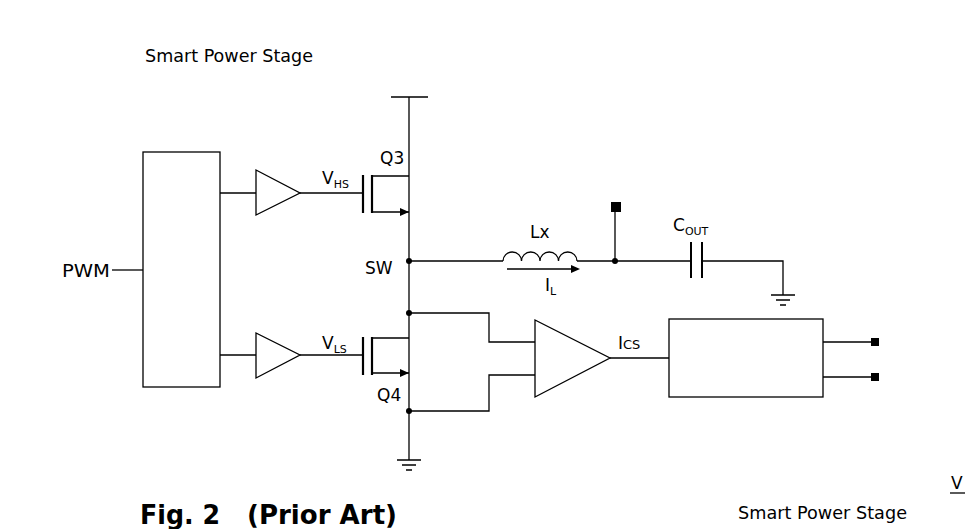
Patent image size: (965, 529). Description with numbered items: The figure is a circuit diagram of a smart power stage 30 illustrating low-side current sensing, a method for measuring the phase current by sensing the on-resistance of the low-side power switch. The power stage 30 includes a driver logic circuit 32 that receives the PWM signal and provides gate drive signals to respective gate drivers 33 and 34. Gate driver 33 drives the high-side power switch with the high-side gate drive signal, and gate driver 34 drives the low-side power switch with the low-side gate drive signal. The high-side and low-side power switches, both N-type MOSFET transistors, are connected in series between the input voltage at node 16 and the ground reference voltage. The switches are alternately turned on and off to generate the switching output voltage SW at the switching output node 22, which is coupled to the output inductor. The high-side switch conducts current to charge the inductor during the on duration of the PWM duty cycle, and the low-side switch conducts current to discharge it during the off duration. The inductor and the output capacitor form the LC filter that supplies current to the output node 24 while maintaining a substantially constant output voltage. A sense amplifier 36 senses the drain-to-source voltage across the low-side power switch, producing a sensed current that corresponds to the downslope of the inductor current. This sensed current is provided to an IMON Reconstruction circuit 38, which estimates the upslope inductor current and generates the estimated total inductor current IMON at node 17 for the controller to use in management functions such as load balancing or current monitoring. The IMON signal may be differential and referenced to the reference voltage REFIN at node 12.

The power stage 30 is at (532, 69).
The driver logic circuit 32 is at (172, 277).
The gate driver 33 is at (268, 176).
The gate driver 34 is at (268, 339).
The input voltage node 16 is at (416, 99).
The switching output node 22 is at (449, 261).
The output node 24 is at (637, 261).
The sense amplifier 36 is at (567, 381).
The IMON Reconstruction circuit 38 is at (712, 397).
The IMON node 17 is at (848, 342).
The REFIN node 12 is at (853, 377).